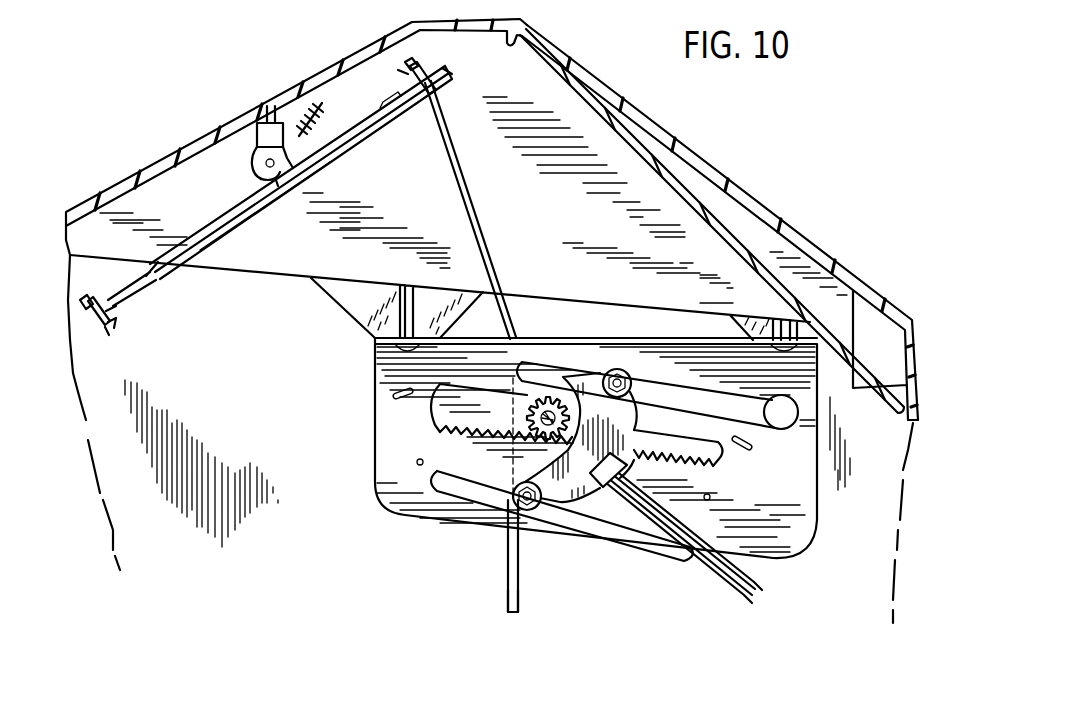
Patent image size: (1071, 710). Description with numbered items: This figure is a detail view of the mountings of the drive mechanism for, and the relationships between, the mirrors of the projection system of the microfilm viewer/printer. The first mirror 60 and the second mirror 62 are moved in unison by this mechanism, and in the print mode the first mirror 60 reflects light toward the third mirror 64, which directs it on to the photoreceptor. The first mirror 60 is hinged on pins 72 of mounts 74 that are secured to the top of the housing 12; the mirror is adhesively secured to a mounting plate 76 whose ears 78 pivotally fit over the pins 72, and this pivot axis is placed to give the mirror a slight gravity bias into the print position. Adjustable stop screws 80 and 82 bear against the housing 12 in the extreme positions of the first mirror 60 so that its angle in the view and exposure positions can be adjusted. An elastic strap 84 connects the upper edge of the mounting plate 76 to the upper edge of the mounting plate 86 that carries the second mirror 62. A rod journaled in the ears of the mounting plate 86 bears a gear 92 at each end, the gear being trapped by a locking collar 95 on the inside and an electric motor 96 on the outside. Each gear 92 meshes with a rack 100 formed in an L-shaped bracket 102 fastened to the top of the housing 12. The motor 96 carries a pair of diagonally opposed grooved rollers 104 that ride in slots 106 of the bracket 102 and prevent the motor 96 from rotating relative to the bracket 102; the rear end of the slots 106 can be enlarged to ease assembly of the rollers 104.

The housing 12 is at (358, 50).
The first mirror 60 is at (166, 278).
The second mirror 62 is at (505, 592).
The third mirror 64 is at (655, 185).
The pins 72 is at (318, 110).
The mounts 74 is at (256, 138).
The mounting plate 76 is at (204, 228).
The ears 78 is at (256, 174).
The adjustable stop screw 80 is at (425, 64).
The adjustable stop screw 82 is at (106, 330).
The elastic strap 84 is at (473, 206).
The mounting plate 86 is at (520, 599).
The gear 92 is at (512, 417).
The locking collar 95 is at (515, 410).
The electric motor 96 is at (590, 524).
The rack 100 is at (688, 445).
The L-shaped bracket 102 is at (375, 452).
The grooved rollers 104 is at (612, 368).
The slots 106 is at (742, 408).